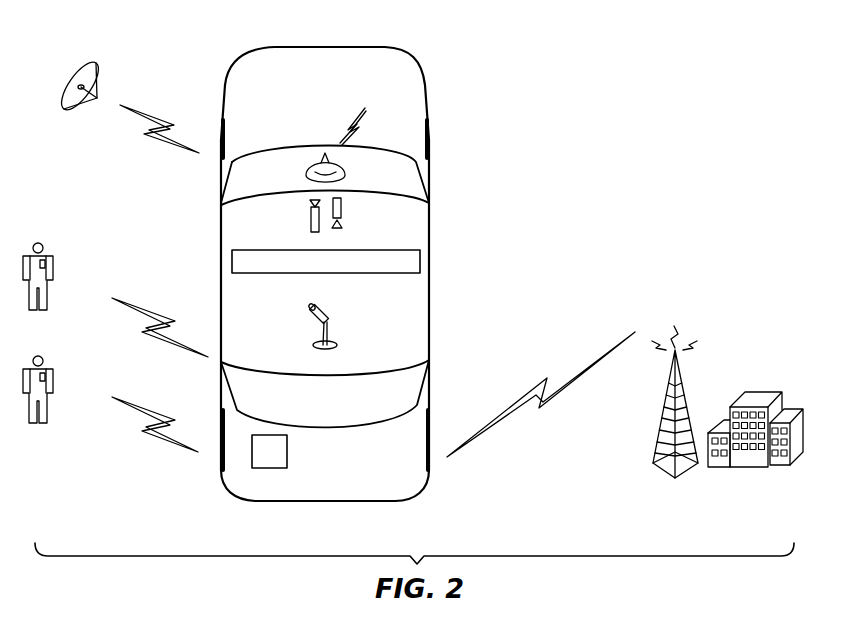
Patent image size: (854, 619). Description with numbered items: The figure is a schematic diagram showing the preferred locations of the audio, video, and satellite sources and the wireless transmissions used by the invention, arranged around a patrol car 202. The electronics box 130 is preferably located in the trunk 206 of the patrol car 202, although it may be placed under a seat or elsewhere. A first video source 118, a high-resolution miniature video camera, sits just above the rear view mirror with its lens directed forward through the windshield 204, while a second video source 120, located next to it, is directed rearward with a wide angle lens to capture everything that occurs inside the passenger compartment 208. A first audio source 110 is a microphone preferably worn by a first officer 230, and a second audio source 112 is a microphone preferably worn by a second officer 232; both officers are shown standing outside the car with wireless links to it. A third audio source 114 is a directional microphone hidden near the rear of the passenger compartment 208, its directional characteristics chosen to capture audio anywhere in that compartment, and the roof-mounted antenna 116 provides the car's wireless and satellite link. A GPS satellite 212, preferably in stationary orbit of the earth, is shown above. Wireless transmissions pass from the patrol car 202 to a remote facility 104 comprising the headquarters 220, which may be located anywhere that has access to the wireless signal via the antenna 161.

The remote facility / service center 104 is at (773, 417).
The first audio source 110 is at (53, 276).
The second audio source 112 is at (53, 371).
The third audio source 114 is at (331, 318).
The antenna 116 is at (348, 168).
The first video source 118 is at (311, 214).
The second video source 120 is at (341, 204).
The electronics box 130 is at (287, 450).
The antenna 161 is at (685, 390).
The patrol car 202 is at (400, 72).
The windshield 204 is at (405, 187).
The trunk 206 is at (400, 497).
The passenger compartment 208 is at (413, 297).
The GPS satellite 212 is at (76, 70).
The headquarters 220 is at (758, 460).
The first officer 230 is at (53, 257).
The second officer 232 is at (52, 365).